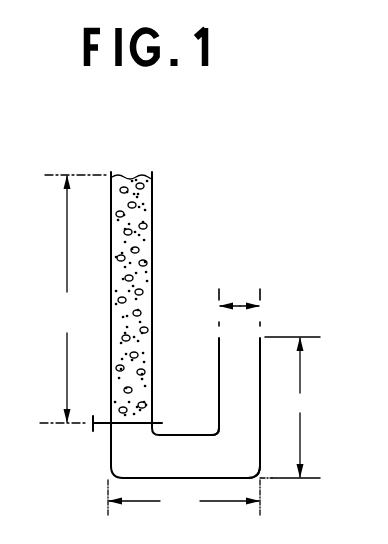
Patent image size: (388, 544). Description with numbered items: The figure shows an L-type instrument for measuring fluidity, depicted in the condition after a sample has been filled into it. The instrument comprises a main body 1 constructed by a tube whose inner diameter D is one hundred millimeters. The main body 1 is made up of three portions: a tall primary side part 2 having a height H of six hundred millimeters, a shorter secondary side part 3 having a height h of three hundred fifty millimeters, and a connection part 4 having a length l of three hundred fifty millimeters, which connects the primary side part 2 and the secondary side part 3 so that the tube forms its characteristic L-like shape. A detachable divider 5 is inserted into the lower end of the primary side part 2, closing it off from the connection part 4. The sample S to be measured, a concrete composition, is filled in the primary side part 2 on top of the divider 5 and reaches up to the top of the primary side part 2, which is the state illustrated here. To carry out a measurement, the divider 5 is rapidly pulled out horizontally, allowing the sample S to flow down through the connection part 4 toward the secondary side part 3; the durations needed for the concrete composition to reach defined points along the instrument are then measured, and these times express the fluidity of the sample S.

The main body 1 is at (158, 300).
The primary side part 2 is at (153, 201).
The secondary side part 3 is at (262, 372).
The connection part 4 is at (152, 478).
The detachable divider 5 is at (103, 424).
The sample S is at (138, 251).
The height of the primary side part H is at (74, 299).
The inner diameter D is at (239, 300).
The height of the secondary side part h is at (290, 407).
The length of the connection part l is at (184, 498).